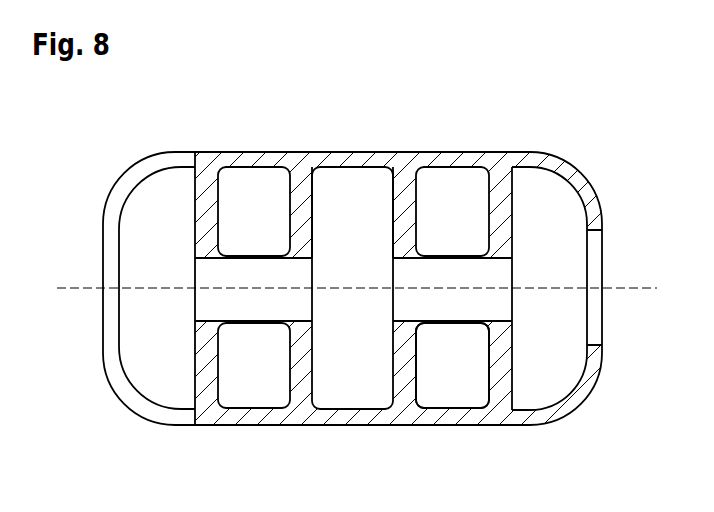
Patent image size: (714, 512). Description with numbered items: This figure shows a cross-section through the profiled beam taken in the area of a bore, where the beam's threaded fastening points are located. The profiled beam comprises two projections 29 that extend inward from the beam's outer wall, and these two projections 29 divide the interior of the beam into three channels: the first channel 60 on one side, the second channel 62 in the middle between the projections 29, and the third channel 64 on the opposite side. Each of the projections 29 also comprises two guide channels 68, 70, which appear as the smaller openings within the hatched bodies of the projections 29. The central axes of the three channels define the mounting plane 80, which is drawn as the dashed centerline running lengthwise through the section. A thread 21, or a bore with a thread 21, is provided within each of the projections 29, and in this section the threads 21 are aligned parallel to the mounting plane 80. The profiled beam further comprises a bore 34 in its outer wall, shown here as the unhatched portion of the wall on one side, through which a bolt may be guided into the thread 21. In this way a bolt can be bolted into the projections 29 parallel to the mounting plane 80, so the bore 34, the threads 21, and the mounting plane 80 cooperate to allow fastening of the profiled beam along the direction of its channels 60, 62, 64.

The thread 21 is at (208, 321).
The projection 29 is at (316, 191).
The bore 34 is at (594, 252).
The first channel 60 is at (155, 203).
The second channel 62 is at (368, 180).
The third channel 64 is at (556, 202).
The guide channel 68 is at (457, 180).
The guide channel 70 is at (456, 397).
The mounting plane 80 is at (75, 287).